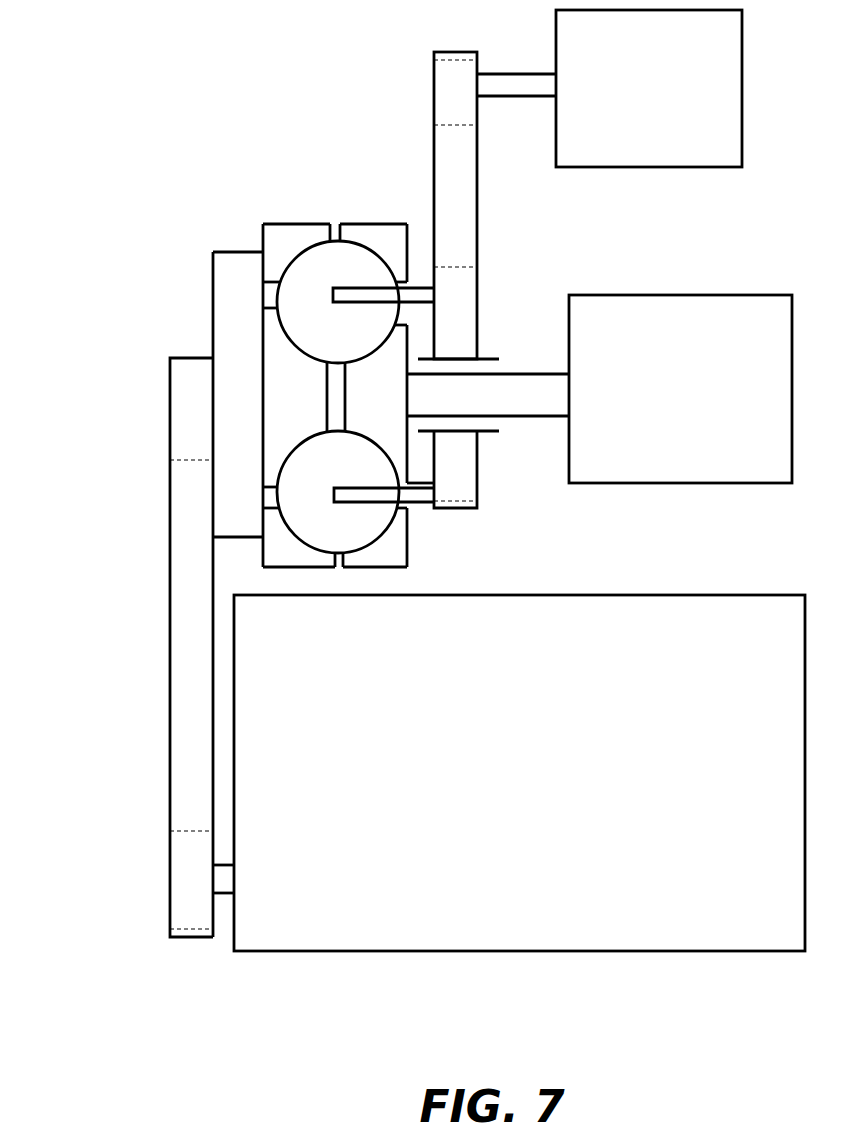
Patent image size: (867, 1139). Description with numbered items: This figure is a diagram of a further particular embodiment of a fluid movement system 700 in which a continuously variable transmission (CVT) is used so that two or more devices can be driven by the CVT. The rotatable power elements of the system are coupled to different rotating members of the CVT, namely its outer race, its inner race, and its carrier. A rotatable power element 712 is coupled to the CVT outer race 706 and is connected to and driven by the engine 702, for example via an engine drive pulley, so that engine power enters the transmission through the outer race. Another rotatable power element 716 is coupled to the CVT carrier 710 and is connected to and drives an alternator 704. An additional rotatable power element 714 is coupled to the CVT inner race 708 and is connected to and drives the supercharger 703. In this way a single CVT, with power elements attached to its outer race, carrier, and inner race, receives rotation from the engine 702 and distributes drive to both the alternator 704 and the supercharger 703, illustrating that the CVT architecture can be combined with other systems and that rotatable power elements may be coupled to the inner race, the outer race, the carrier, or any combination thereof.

The engine system 700 is at (110, 78).
The engine 702 is at (519, 773).
The supercharger 703 is at (680, 389).
The alternator 704 is at (609, 88).
The CVT outer race 706 is at (282, 212).
The CVT inner race 708 is at (380, 360).
The CVT carrier 710 is at (423, 516).
The rotatable power element 712 is at (202, 290).
The rotatable power element 714 is at (514, 360).
The rotatable power element 716 is at (515, 59).